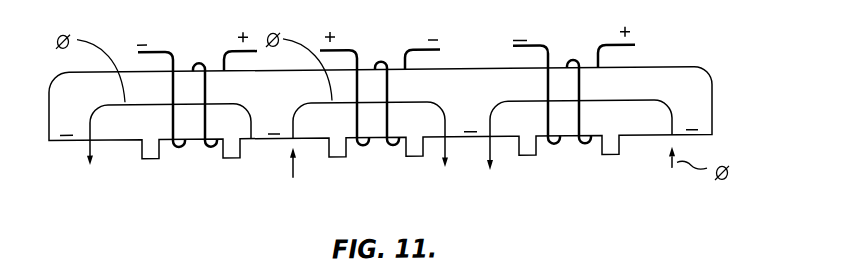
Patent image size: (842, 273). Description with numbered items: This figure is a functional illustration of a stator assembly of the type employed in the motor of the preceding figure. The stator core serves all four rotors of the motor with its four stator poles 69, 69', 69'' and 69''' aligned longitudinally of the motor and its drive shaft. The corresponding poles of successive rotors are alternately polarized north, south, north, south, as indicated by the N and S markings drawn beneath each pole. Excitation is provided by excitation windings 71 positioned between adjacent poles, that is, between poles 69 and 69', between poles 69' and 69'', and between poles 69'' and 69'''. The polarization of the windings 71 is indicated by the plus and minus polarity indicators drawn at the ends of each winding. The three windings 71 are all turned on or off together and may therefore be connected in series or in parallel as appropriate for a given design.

The stator pole 69 is at (367, 135).
The stator pole 69' is at (193, 153).
The stator pole 69'' is at (385, 152).
The stator pole 69''' is at (592, 150).
The excitation winding 71 is at (186, 145).